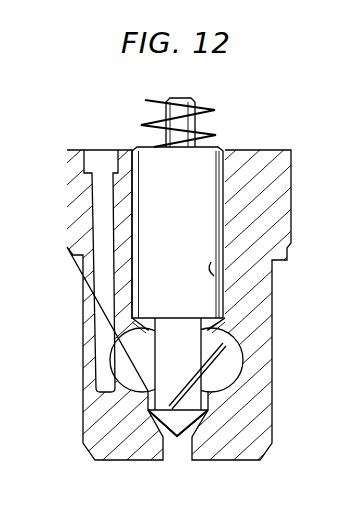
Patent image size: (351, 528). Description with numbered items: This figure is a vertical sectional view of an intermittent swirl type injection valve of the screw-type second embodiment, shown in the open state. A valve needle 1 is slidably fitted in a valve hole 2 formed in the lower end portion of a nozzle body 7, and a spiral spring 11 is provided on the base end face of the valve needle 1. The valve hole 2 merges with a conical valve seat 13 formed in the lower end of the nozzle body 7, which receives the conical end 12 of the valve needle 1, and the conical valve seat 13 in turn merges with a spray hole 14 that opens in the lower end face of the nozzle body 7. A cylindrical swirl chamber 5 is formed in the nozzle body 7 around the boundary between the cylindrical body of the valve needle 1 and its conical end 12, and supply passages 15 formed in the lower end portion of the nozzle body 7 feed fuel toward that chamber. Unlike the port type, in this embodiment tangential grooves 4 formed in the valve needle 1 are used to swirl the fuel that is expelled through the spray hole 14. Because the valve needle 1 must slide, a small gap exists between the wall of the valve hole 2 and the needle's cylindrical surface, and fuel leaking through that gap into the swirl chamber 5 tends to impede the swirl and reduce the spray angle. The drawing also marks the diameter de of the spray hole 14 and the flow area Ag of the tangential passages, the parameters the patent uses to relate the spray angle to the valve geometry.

The valve needle 1 is at (210, 216).
The valve hole 2 is at (214, 276).
The tangential grooves 4 is at (233, 390).
The swirl chamber 5 is at (194, 437).
The nozzle body 7 is at (293, 169).
The spiral spring 11 is at (196, 108).
The conical end 12 is at (153, 442).
The conical valve seat 13 is at (200, 421).
The spray hole 14 is at (172, 448).
The supply passages 15 is at (104, 260).
The area of the tangential ports Ag is at (208, 336).
The diameter of the spray hole de is at (163, 462).